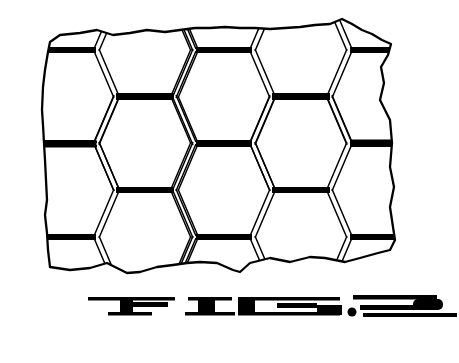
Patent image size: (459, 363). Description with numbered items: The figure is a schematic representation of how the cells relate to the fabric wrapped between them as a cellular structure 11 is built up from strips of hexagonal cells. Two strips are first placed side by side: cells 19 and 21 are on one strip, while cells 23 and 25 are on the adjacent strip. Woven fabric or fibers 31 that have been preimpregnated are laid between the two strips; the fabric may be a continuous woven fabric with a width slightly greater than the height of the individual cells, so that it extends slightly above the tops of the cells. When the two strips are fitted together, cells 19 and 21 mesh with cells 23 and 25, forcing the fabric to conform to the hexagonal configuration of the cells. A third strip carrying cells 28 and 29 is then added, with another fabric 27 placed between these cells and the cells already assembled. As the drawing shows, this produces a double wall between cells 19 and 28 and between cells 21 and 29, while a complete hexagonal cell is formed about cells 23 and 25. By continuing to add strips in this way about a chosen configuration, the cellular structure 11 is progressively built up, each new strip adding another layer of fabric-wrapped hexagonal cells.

The honeycomb panel 11 is at (441, 213).
The cell 19 is at (68, 97).
The cell 21 is at (224, 97).
The cell 23 is at (145, 143).
The cell 25 is at (301, 143).
The fabric 27 is at (74, 147).
The cell 28 is at (68, 190).
The cell 29 is at (224, 190).
The woven fabric or fibers 31 is at (63, 141).